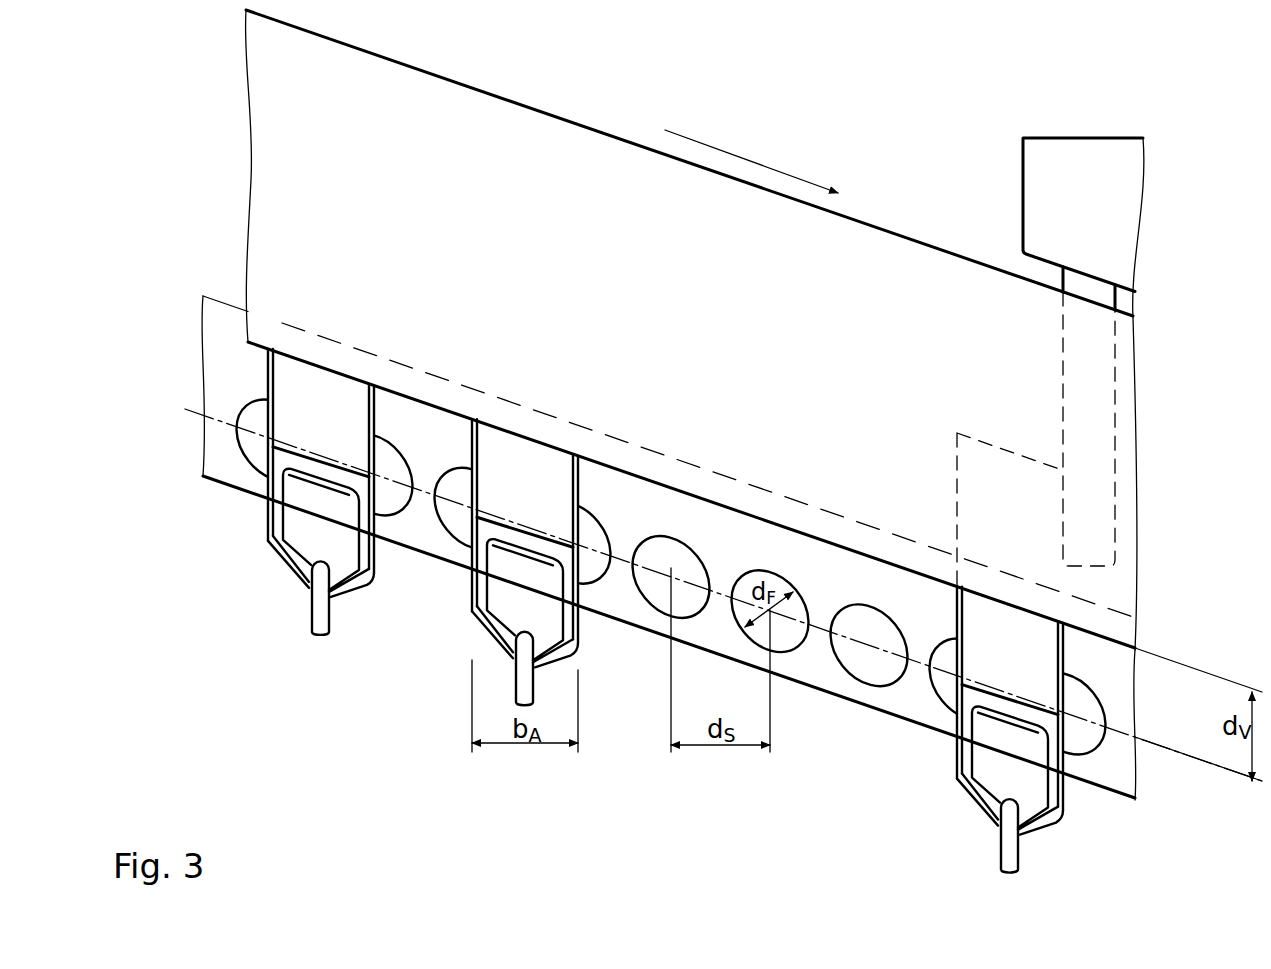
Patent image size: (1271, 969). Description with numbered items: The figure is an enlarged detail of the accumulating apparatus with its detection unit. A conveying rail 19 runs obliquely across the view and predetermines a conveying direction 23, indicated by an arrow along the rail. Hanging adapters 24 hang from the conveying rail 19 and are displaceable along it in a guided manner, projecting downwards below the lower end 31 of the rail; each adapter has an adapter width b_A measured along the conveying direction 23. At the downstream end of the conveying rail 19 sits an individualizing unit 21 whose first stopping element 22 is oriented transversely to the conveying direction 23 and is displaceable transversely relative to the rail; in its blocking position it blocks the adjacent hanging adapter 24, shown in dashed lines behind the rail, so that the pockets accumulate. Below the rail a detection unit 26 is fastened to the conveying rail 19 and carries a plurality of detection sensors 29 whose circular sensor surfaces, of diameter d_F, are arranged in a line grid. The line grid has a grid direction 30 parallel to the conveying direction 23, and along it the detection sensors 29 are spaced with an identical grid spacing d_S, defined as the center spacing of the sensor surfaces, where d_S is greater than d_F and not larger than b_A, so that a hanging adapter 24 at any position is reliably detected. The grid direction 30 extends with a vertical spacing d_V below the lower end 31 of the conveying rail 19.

The conveying rail 19 is at (600, 133).
The individualizing unit 21 is at (1073, 134).
The first stopping element 22 is at (1090, 293).
The conveying direction 23 is at (728, 150).
The hanging adapter 24 is at (273, 538).
The detection unit 26 is at (214, 481).
The detection sensors 29 is at (255, 443).
The grid direction 30 is at (1108, 730).
The lower end 31 is at (264, 349).